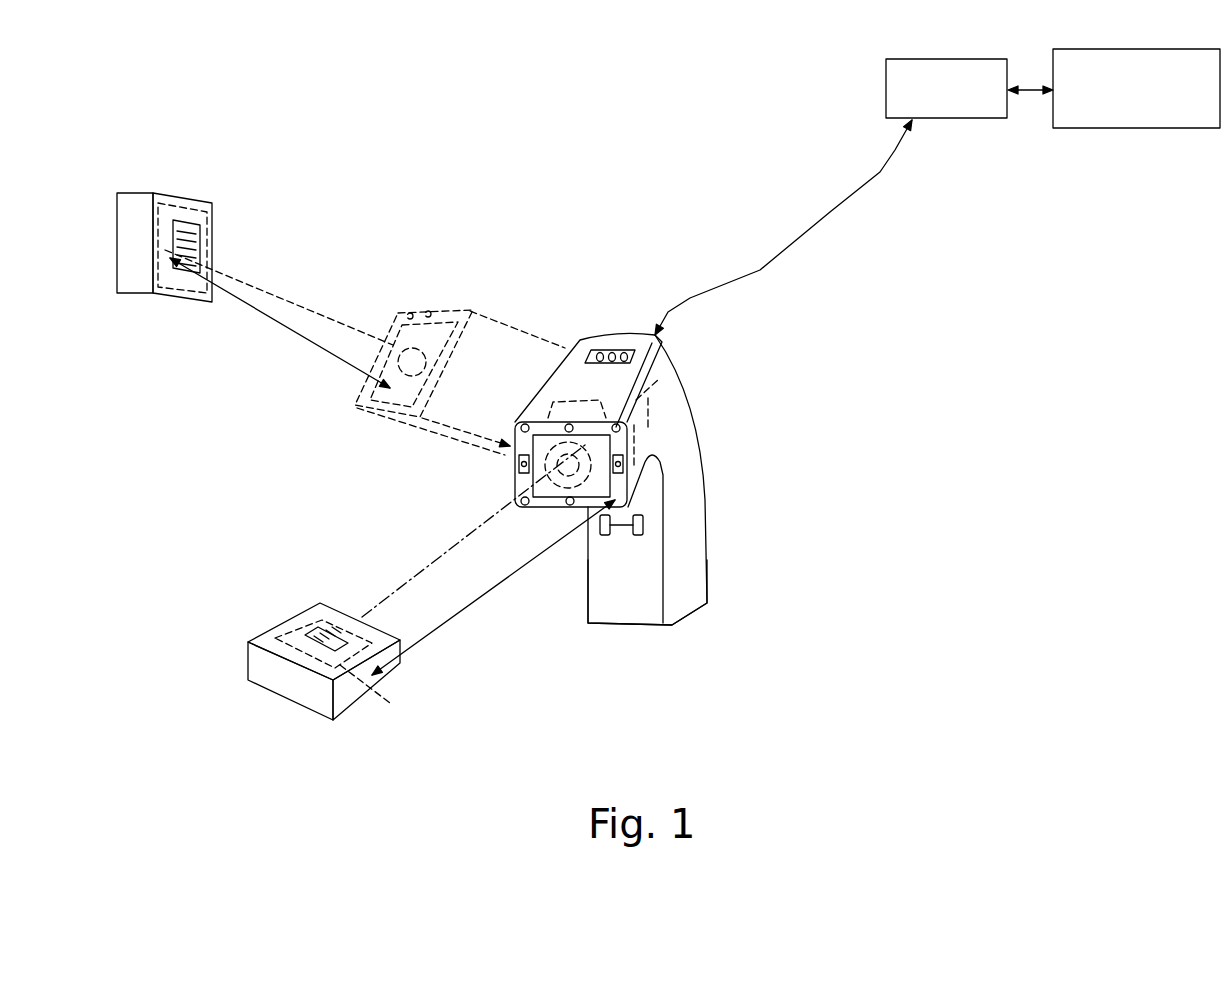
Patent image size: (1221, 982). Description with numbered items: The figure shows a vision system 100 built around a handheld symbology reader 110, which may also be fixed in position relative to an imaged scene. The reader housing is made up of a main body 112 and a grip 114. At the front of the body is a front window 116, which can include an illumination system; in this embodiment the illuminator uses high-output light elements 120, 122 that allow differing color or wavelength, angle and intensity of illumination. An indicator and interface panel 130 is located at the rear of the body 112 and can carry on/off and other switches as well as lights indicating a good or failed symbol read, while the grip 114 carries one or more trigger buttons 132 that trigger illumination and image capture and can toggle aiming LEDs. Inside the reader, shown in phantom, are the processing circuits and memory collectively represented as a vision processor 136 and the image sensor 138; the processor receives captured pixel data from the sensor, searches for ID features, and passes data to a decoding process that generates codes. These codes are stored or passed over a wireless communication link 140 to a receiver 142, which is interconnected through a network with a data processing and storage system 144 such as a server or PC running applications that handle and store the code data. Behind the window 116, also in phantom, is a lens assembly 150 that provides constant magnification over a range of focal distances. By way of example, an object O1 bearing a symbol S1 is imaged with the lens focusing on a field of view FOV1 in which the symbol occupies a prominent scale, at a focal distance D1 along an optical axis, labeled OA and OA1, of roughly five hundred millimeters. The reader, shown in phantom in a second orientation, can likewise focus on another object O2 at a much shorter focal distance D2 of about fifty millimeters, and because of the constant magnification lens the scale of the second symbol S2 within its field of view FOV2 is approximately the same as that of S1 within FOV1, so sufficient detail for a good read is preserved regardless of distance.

The vision system 100 is at (785, 95).
The symbology reader 110 is at (708, 488).
The main body 112 is at (415, 313).
The grip 114 is at (690, 555).
The front window 116 is at (520, 470).
The light element 120 is at (569, 424).
The light element 122 is at (519, 460).
The indicator and interface panel 130 is at (607, 347).
The trigger button 132 is at (643, 527).
The vision processor 136 is at (648, 433).
The image sensor 138 is at (677, 362).
The communication link 140 is at (827, 210).
The receiver 142 is at (983, 120).
The data processing and storage system 144 is at (1090, 128).
The lens assembly 150 is at (397, 330).
The object O1 is at (347, 697).
The object O2 is at (133, 268).
The symbol S1 is at (332, 632).
The second symbol S2 is at (197, 233).
The field of view FOV1 is at (397, 703).
The field of view FOV2 is at (182, 305).
The optical axis OA is at (437, 561).
The optical axis OA1 is at (243, 268).
The focal distance D1 is at (503, 582).
The focal distance D2 is at (252, 303).